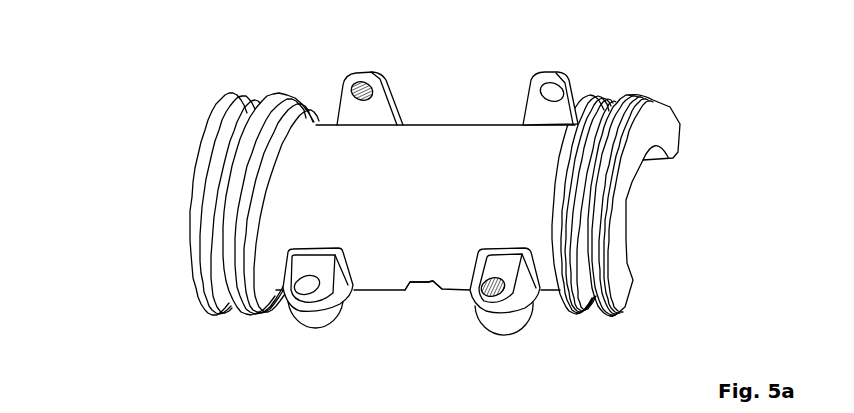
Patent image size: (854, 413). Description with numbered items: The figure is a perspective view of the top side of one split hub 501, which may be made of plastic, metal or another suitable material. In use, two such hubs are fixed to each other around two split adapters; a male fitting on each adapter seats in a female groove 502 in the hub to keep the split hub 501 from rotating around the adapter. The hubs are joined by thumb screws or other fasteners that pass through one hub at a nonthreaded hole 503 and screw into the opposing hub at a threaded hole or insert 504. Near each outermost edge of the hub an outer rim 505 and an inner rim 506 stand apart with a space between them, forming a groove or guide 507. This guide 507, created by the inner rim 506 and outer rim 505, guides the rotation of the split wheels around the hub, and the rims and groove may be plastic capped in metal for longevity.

The split hub 501 is at (466, 98).
The female groove 502 is at (434, 283).
The nonthreaded hole 503 is at (286, 290).
The threaded hole or insert 504 is at (514, 284).
The outer rim 505 is at (184, 160).
The inner rim 506 is at (276, 84).
The groove or guide 507 is at (231, 298).